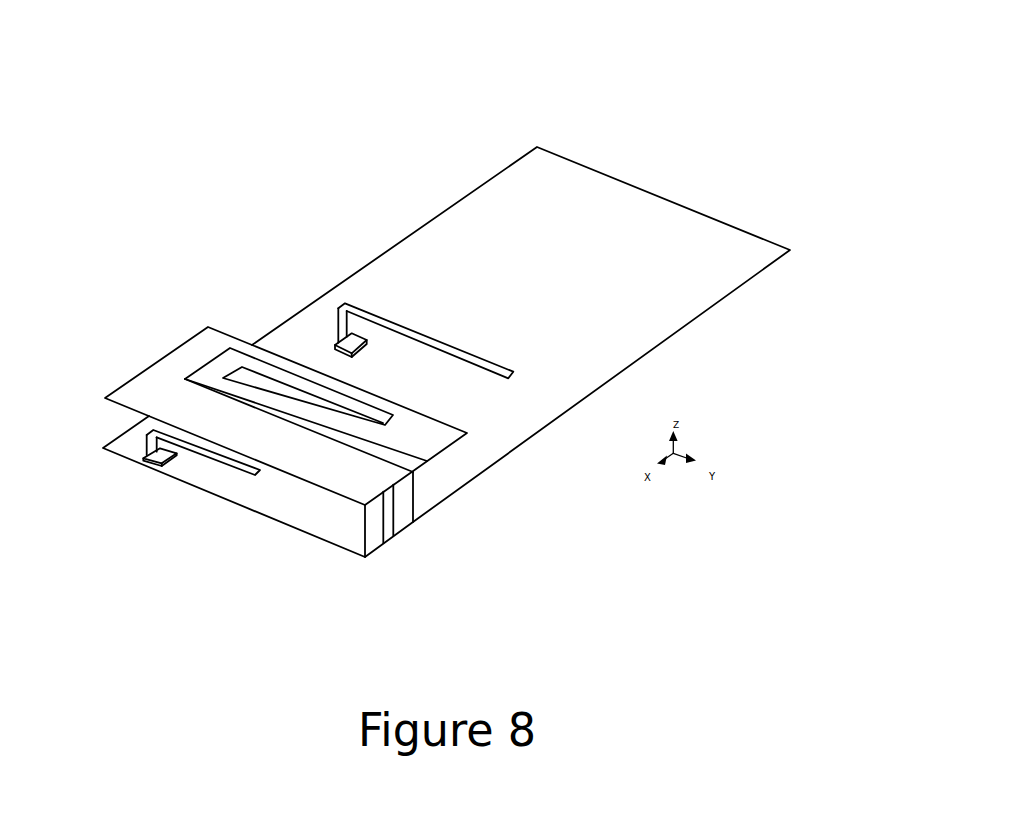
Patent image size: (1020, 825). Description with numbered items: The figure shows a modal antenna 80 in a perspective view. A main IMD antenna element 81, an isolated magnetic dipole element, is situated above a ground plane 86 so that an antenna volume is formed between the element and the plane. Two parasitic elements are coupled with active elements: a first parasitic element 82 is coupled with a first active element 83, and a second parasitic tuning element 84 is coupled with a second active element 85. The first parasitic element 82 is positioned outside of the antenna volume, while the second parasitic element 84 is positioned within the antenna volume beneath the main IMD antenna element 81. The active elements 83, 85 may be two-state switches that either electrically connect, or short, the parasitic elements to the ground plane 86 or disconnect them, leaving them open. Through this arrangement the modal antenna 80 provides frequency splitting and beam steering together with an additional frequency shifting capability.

The modal antenna 80 is at (236, 140).
The main IMD antenna element 81 is at (163, 363).
The first parasitic element 82 is at (453, 350).
The first active element 83 is at (334, 347).
The second parasitic tuning element 84 is at (222, 460).
The second active element 85 is at (143, 463).
The ground plane 86 is at (652, 210).